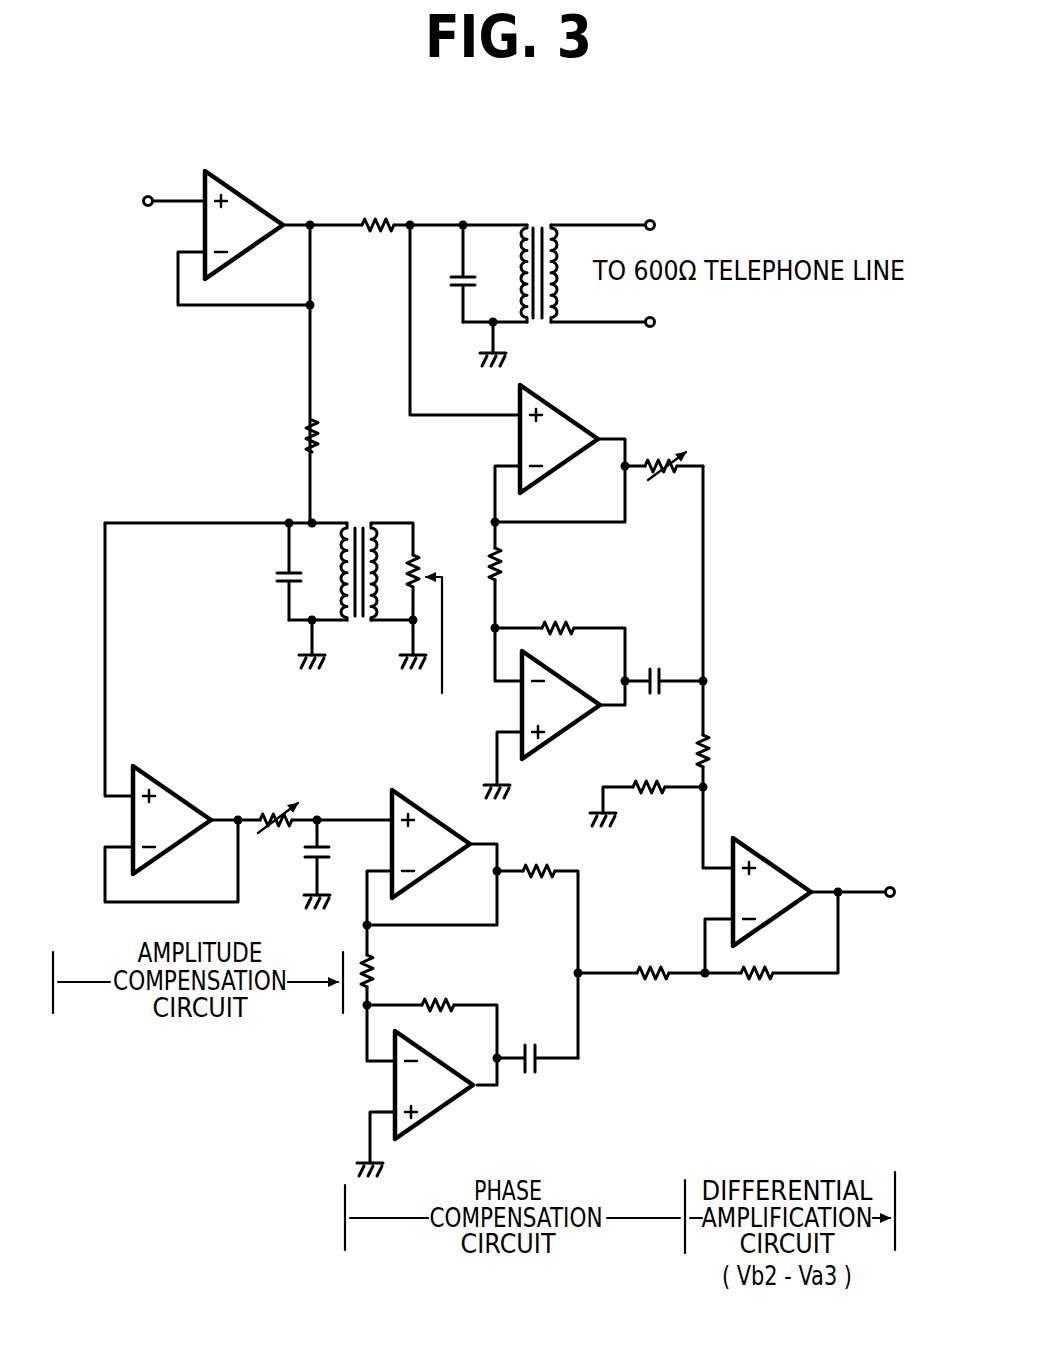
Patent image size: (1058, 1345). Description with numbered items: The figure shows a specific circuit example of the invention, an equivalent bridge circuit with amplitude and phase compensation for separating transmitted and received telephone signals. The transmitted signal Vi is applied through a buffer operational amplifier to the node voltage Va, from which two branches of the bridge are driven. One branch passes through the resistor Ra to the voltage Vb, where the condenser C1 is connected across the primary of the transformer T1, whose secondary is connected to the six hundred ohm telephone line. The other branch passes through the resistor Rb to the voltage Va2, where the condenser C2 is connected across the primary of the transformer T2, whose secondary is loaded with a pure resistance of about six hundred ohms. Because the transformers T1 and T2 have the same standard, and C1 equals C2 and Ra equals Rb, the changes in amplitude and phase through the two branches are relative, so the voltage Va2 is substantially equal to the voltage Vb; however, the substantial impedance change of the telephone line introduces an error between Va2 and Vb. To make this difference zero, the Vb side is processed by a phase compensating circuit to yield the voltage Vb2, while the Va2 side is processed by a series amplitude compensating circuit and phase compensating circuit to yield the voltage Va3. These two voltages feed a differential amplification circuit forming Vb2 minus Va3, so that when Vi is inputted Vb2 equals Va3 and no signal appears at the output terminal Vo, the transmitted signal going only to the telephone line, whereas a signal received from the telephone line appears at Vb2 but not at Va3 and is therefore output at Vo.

The input signal voltage Vi is at (158, 201).
The voltage Va is at (314, 218).
The voltage Vb is at (438, 218).
The resistor Ra is at (382, 229).
The resistor Rb is at (325, 436).
The condenser C1 is at (449, 272).
The condenser C2 is at (276, 570).
The transformer T1 is at (559, 258).
The transformer T2 is at (378, 607).
The voltage Va2 is at (215, 516).
The voltage Vb2 is at (713, 708).
The voltage Va3 is at (651, 991).
The output terminal Vo is at (872, 892).